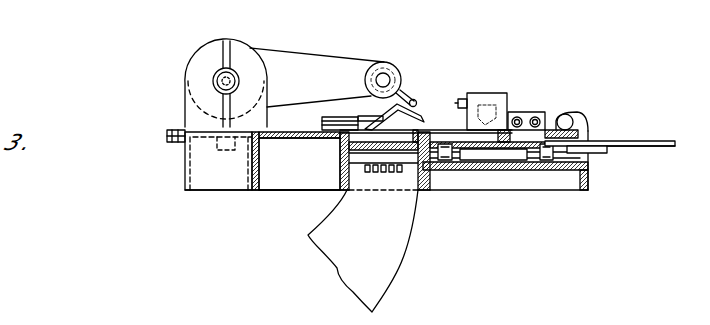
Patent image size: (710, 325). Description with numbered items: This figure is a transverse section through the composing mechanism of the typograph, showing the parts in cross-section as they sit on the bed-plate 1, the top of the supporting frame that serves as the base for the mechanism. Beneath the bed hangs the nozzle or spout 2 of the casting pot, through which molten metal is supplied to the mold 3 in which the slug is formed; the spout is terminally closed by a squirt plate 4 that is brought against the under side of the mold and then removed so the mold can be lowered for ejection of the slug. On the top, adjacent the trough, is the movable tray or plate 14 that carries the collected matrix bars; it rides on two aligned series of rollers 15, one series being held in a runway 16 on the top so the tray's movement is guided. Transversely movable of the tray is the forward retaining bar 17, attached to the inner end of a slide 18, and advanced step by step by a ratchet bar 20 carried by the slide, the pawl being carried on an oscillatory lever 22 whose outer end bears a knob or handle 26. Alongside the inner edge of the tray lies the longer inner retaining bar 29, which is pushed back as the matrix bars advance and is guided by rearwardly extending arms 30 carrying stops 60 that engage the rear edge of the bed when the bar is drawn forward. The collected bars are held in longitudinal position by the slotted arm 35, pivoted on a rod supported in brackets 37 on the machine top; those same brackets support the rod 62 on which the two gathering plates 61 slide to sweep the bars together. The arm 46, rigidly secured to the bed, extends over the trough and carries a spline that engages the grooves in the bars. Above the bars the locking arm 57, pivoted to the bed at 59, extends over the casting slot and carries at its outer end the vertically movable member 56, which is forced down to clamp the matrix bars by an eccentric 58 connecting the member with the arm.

The bed-plate 1 is at (490, 172).
The nozzle or spout 2 is at (398, 252).
The mold 3 is at (342, 157).
The squirt plate 4 is at (340, 190).
The tray or plate 14 is at (452, 130).
The rollers 15 is at (444, 162).
The runway 16 is at (455, 172).
The bar 17 is at (516, 160).
The slide 18 is at (641, 148).
The ratchet bar 20 is at (635, 141).
The oscillatory lever 22 is at (566, 113).
The knob or handle 26 is at (583, 117).
The bar 29 is at (432, 130).
The arms 30 is at (531, 117).
The slotted arm 35 is at (480, 112).
The brackets 37 is at (567, 114).
The arm 46 is at (352, 112).
The vertically movable member 56 is at (397, 105).
The arm 57 is at (277, 58).
The eccentric 58 is at (393, 62).
The pivot 59 is at (213, 78).
The stops 60 is at (169, 141).
The plates 61 is at (515, 116).
The rod 62 is at (537, 116).